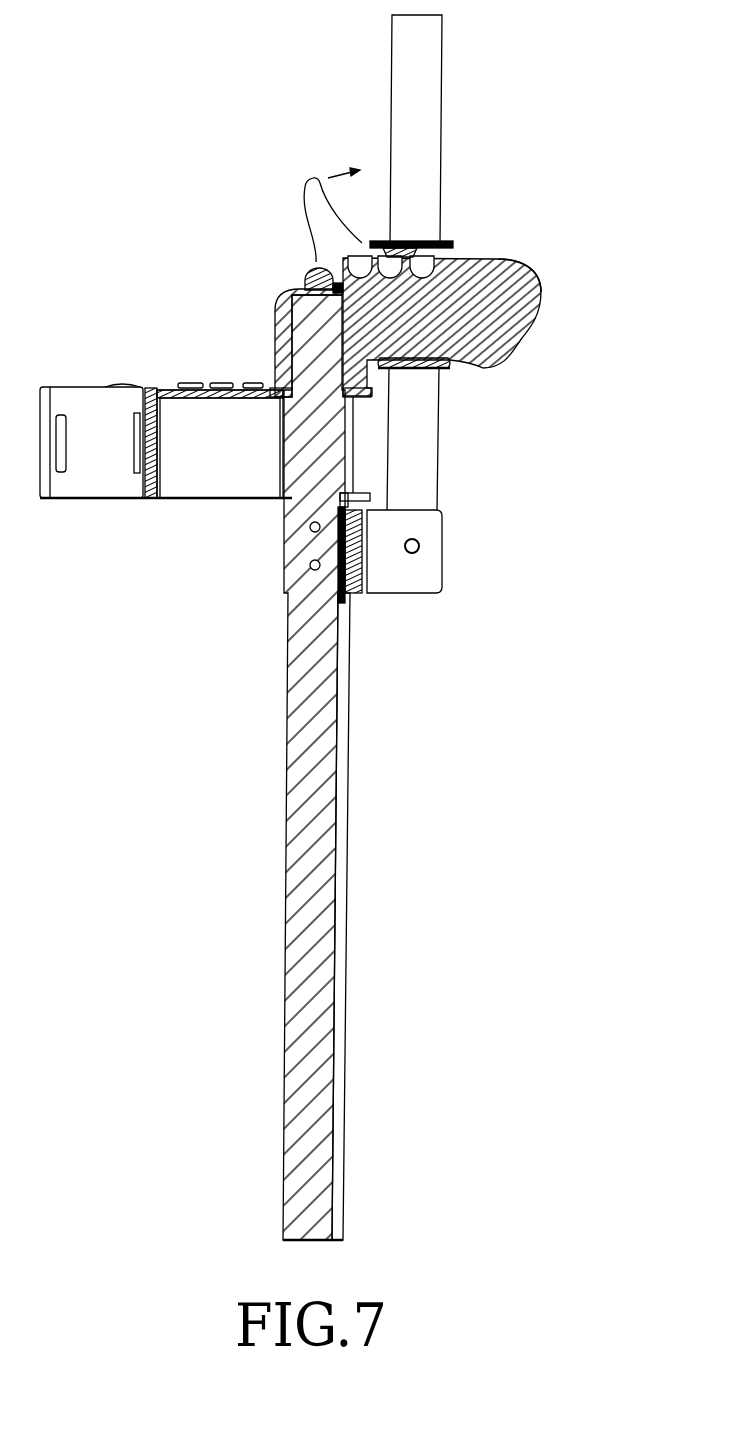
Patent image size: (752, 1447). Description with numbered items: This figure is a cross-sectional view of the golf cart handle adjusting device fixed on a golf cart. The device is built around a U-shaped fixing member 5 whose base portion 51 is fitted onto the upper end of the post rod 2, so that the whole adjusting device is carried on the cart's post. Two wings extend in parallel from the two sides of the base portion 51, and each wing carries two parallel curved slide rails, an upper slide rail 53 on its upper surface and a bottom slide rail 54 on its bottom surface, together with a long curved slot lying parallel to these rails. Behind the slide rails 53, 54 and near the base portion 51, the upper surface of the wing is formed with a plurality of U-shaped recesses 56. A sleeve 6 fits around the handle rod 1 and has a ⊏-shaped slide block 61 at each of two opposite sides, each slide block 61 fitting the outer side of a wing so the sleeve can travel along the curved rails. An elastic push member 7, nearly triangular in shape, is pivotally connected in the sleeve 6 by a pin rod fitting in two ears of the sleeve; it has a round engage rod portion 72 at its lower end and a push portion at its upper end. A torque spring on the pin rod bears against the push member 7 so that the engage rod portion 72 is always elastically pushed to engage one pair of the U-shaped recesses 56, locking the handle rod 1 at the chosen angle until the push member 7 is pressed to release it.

The handle rod 1 is at (430, 143).
The post rod 2 is at (328, 677).
The U-shaped fixing member 5 is at (523, 327).
The base portion 51 is at (273, 340).
The upper slide rail 53 is at (524, 272).
The bottom slide rail 54 is at (463, 367).
The U-shaped recesses 56 is at (362, 255).
The sleeve 6 is at (443, 246).
The slide block 61 is at (412, 237).
The elastic push member 7 is at (315, 178).
The engage rod portion 72 is at (305, 270).